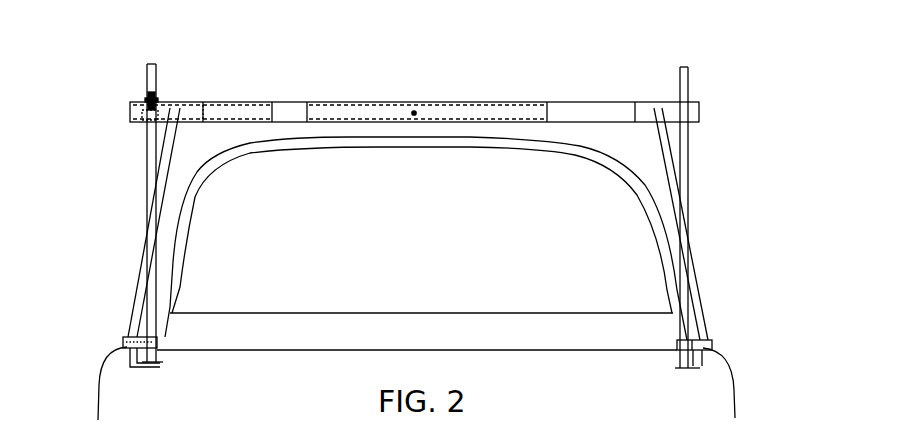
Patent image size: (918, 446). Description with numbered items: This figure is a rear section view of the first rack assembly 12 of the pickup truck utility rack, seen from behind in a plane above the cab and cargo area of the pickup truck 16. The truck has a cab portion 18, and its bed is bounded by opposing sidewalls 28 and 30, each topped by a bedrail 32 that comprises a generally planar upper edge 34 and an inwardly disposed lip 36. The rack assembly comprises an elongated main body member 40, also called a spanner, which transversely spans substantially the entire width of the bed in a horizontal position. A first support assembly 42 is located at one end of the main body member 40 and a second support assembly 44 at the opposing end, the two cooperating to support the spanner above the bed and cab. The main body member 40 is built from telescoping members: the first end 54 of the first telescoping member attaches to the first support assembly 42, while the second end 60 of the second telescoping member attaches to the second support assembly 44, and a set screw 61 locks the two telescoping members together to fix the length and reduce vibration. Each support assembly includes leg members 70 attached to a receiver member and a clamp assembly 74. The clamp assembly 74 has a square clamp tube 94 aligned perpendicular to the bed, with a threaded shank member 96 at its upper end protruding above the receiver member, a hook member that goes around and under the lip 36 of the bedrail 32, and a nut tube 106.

The first rack assembly 12 is at (296, 96).
The pickup truck 16 is at (550, 138).
The cab portion 18 is at (354, 138).
The sidewall 28 is at (742, 365).
The sidewall 30 is at (88, 383).
The bedrail 32 is at (110, 332).
The upper edge 34 is at (693, 376).
The lip 36 is at (146, 360).
The main body member 40 is at (480, 93).
The first support assembly 42 is at (138, 227).
The second support assembly 44 is at (704, 226).
The first end of first telescoping member 54 is at (174, 95).
The second end of second telescoping member 60 is at (636, 90).
The set screw 61 is at (414, 113).
The leg member 70 is at (700, 290).
The clamp assembly 74 is at (193, 238).
The clamp tube 94 is at (690, 150).
The threaded shank member 96 is at (149, 92).
The nut tube 106 is at (686, 88).